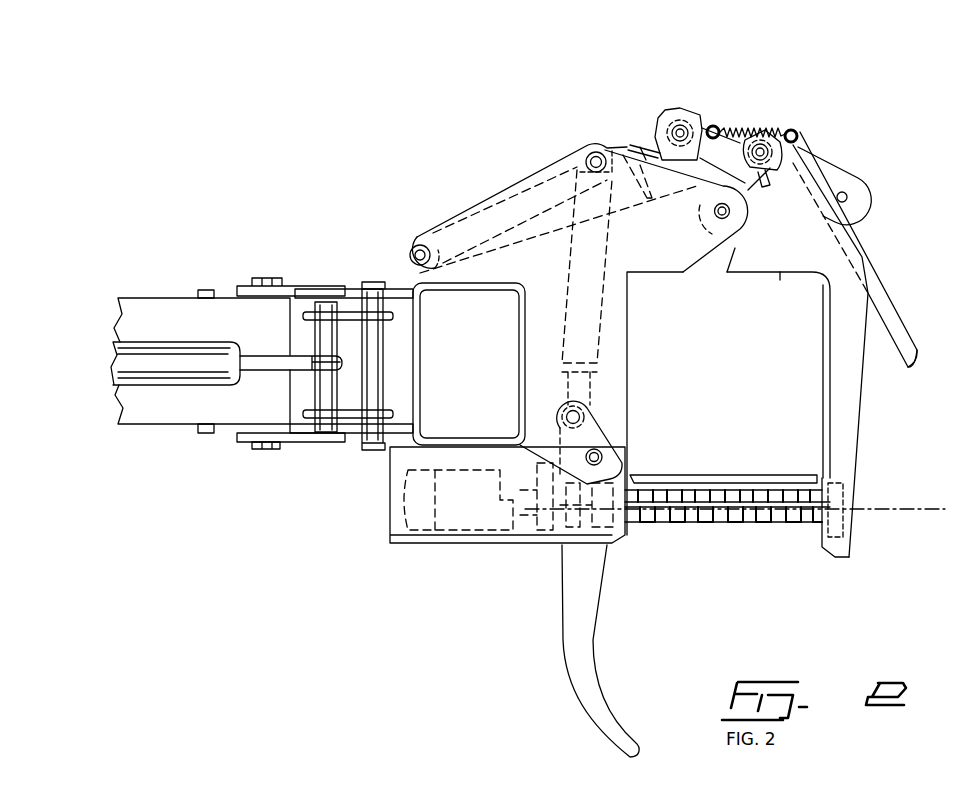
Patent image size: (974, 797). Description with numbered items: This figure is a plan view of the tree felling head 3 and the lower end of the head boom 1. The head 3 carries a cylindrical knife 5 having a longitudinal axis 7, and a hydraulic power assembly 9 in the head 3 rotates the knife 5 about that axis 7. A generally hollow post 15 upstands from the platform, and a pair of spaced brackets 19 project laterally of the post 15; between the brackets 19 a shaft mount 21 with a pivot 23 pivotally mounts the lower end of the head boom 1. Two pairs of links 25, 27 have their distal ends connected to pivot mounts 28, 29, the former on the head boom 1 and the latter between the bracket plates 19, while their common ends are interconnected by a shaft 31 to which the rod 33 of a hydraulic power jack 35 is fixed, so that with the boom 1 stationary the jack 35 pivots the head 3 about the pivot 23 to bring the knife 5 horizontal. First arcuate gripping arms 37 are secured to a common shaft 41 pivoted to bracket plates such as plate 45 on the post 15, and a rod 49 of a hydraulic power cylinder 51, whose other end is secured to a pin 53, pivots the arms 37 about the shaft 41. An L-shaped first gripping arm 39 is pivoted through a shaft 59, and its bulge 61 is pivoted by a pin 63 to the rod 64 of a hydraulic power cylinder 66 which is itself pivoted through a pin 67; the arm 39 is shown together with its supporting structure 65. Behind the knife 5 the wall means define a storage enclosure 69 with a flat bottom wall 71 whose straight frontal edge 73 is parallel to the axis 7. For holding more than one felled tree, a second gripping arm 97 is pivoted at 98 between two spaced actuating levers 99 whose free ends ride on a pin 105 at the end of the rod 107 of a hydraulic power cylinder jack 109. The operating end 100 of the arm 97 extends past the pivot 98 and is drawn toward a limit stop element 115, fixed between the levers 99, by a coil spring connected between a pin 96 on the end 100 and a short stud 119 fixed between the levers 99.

The head boom 1 is at (160, 412).
The tree felling head 3 is at (836, 146).
The cylindrical knife 5 is at (705, 520).
The longitudinal axis 7 is at (926, 507).
The hydraulic power assembly 9 is at (458, 550).
The post 15 is at (477, 280).
The brackets 19 is at (335, 289).
The shaft mount 21 is at (265, 448).
The pivot 23 is at (252, 437).
The links 25 is at (297, 286).
The links 27 is at (393, 316).
The pivot mount 28 is at (207, 290).
The pivot mount 29 is at (385, 364).
The shaft 31 is at (322, 390).
The rod 33 is at (268, 356).
The hydraulic power jack 35 is at (196, 342).
The first arcuate gripping arms 37 is at (598, 673).
The first gripping arm 39 is at (845, 437).
The common shaft 41 is at (606, 455).
The bracket plate 45 is at (627, 383).
The rod 49 is at (567, 398).
The hydraulic power cylinder 51 is at (580, 312).
The pin 53 is at (598, 150).
The shaft 59 is at (712, 213).
The bulge 61 is at (780, 265).
The pin 63 is at (762, 140).
The rod 64 is at (716, 125).
The arm 65 is at (553, 163).
The hydraulic power cylinder 66 is at (463, 218).
The pin 67 is at (410, 240).
The storage enclosure 69 is at (724, 333).
The bottom wall 71 is at (812, 458).
The frontal edge 73 is at (735, 472).
The pin 96 is at (812, 122).
The second gripping arm 97 is at (920, 357).
The pivot 98 is at (848, 197).
The actuating levers 99 is at (848, 184).
The operating end 100 is at (795, 130).
The pin 105 is at (682, 120).
The rod 107 is at (665, 143).
The hydraulic power cylinder jack 109 is at (644, 147).
The limit stop element 115 is at (826, 135).
The stud 119 is at (727, 125).